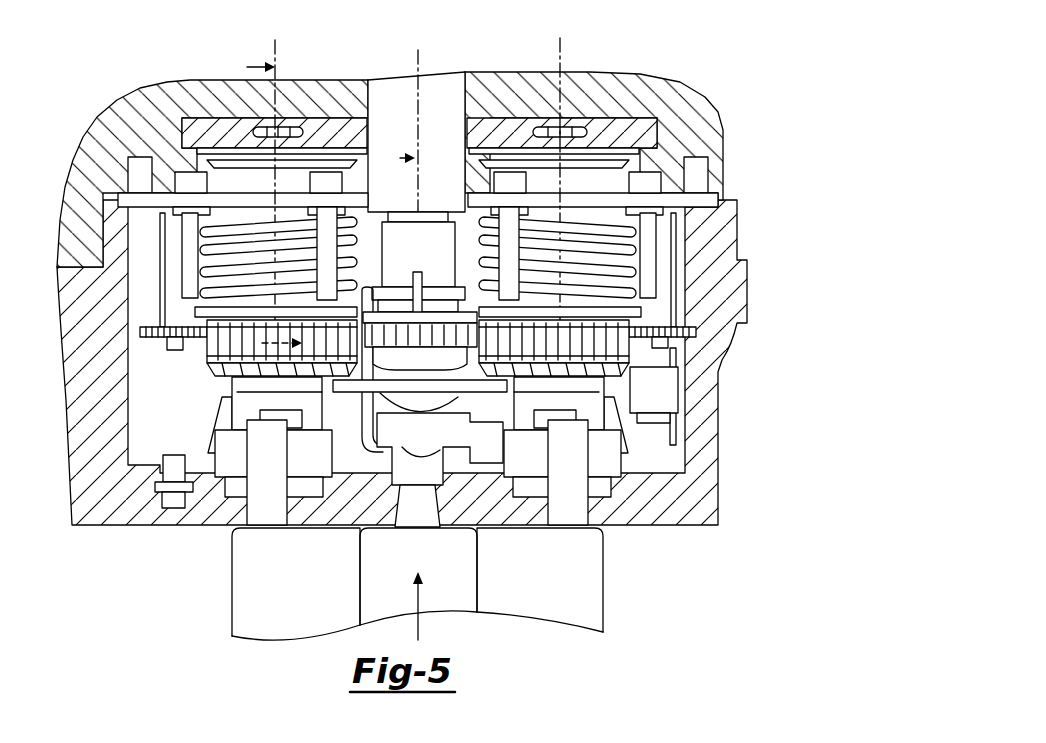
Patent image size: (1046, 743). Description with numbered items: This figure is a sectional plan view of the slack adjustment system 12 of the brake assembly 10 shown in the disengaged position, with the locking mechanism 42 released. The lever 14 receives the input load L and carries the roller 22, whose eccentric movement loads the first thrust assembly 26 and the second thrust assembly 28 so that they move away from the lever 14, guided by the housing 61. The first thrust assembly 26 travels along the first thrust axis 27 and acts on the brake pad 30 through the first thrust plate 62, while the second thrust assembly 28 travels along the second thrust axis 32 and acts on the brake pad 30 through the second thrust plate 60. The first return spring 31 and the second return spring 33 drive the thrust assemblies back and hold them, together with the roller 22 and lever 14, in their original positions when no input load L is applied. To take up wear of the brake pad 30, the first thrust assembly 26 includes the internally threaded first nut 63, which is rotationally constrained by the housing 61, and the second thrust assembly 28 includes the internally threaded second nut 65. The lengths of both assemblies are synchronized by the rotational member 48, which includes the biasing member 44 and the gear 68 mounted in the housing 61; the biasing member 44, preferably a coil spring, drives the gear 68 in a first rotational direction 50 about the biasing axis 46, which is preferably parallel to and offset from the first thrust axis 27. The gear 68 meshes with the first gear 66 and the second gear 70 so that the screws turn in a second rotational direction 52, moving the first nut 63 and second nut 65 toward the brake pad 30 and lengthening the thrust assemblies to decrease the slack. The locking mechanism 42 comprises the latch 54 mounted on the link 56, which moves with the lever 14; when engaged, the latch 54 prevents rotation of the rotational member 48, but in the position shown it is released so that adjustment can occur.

The brake assembly 10 is at (770, 184).
The slack adjustment system 12 is at (662, 308).
The lever 14 is at (405, 500).
The roller 22 is at (596, 410).
The first thrust assembly 26 is at (205, 388).
The first thrust axis 27 is at (268, 45).
The second thrust assembly 28 is at (660, 284).
The brake pad 30 is at (703, 113).
The first return spring 31 is at (207, 232).
The second thrust axis 32 is at (566, 45).
The second return spring 33 is at (630, 234).
The locking mechanism 42 is at (398, 283).
The biasing member 44 is at (442, 210).
The biasing axis 46 is at (430, 108).
The rotational member 48 is at (412, 418).
The first rotational direction 50 is at (393, 157).
The second rotational direction 52 is at (259, 206).
The latch 54 is at (423, 305).
The link 56 is at (340, 426).
The second thrust plate 60 is at (640, 150).
The housing 61 is at (108, 137).
The first thrust plate 62 is at (180, 153).
The first nut 63 is at (207, 272).
The second nut 65 is at (640, 262).
The first gear 66 is at (213, 352).
The gear 68 is at (452, 386).
The second gear 70 is at (622, 368).
The input load L is at (430, 603).